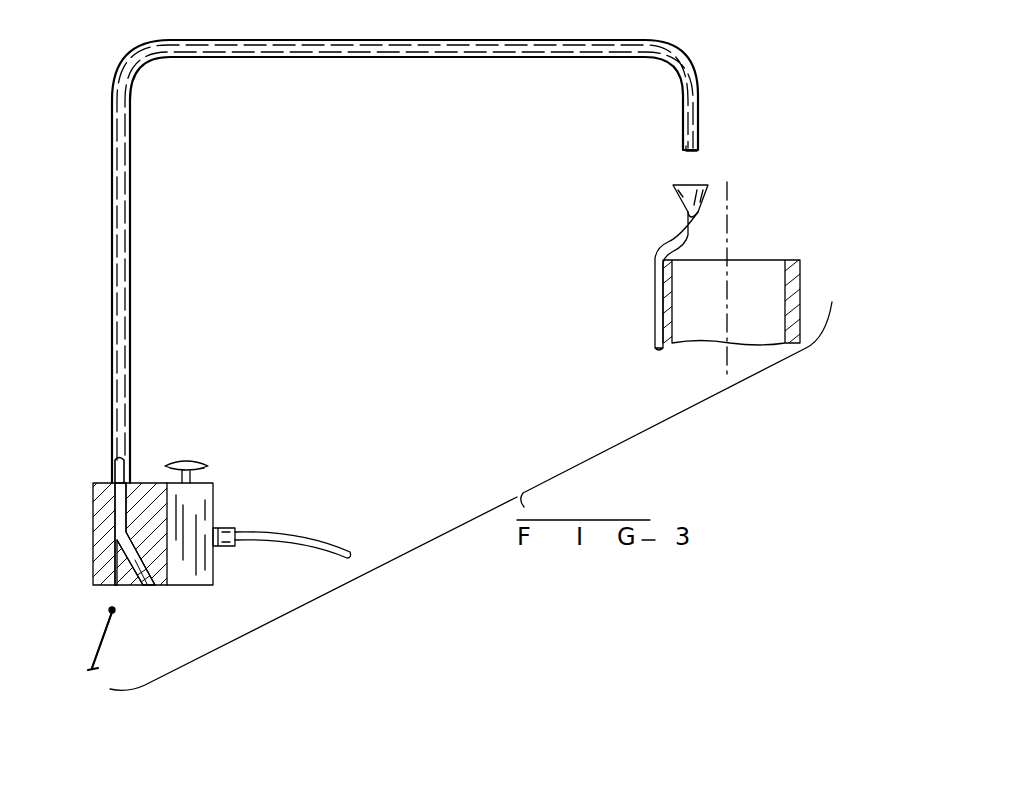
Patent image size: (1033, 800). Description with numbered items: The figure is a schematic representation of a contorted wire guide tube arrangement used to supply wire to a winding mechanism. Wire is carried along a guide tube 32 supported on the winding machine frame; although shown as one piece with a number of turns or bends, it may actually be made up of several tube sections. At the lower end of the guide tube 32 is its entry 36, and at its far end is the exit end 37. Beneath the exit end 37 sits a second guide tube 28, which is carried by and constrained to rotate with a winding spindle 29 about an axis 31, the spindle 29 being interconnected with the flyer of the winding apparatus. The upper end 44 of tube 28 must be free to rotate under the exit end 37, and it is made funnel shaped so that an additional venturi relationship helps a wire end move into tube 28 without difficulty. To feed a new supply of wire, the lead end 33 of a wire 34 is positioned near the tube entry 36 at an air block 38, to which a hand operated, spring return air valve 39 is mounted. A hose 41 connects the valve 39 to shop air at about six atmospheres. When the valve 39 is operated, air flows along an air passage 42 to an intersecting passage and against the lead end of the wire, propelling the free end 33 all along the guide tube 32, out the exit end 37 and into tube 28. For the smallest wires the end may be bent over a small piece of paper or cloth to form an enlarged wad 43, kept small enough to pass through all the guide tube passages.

The guide tube 28 is at (666, 258).
The winding spindle 29 is at (802, 275).
The axis 31 is at (726, 369).
The contorted guide tube 32 is at (514, 44).
The lead end of wire 33 is at (114, 618).
The wire 34 is at (97, 650).
The entry of guide tube 36 is at (92, 518).
The exit end of guide tube 37 is at (699, 153).
The air block 38 is at (148, 481).
The air valve 39 is at (200, 506).
The hose 41 is at (295, 536).
The air passage 42 is at (132, 566).
The wad 43 is at (108, 609).
The upper end of tube 44 is at (674, 190).